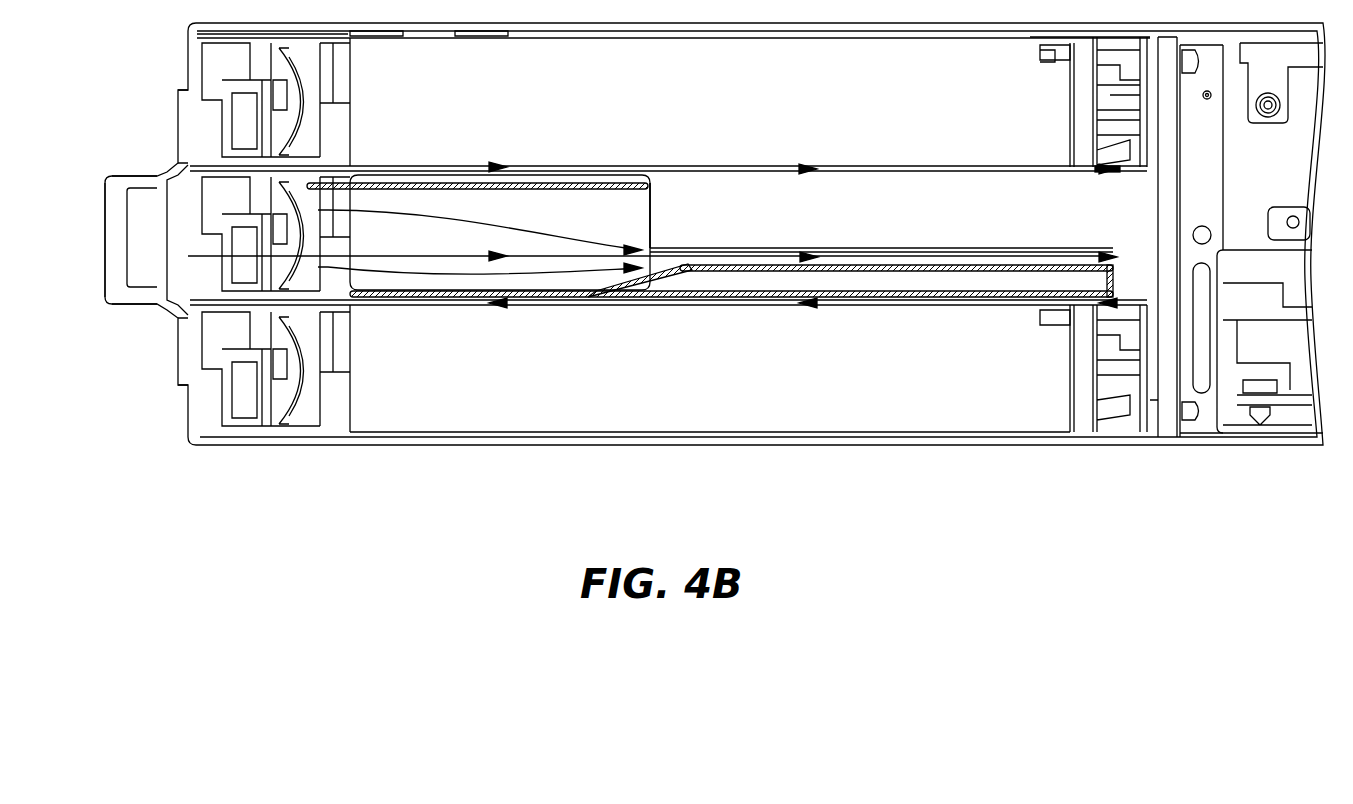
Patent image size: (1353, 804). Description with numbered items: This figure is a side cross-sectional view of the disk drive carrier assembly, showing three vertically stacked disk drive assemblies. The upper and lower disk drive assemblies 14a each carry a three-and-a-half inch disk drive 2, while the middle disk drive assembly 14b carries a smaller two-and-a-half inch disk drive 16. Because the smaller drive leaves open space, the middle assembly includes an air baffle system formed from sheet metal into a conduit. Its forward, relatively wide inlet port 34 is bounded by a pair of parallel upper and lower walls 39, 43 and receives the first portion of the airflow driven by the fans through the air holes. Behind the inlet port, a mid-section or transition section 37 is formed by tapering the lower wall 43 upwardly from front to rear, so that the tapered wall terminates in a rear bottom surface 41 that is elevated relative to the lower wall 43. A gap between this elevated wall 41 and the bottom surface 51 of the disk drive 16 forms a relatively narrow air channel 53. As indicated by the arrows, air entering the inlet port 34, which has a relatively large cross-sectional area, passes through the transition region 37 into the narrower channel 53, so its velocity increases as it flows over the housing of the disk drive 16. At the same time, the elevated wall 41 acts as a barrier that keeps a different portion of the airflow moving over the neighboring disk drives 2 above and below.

The disk drive 2 is at (760, 120).
The disk drive assembly 14a is at (193, 115).
The disk drive assembly 14b is at (143, 233).
The disk drive 16 is at (976, 221).
The inlet port 34 is at (430, 248).
The mid-section 37 is at (676, 275).
The upper wall 39 is at (586, 182).
The bottom surface 41 is at (980, 270).
The lower wall 43 is at (568, 298).
The bottom surface 51 is at (1010, 248).
The air channel 53 is at (760, 245).